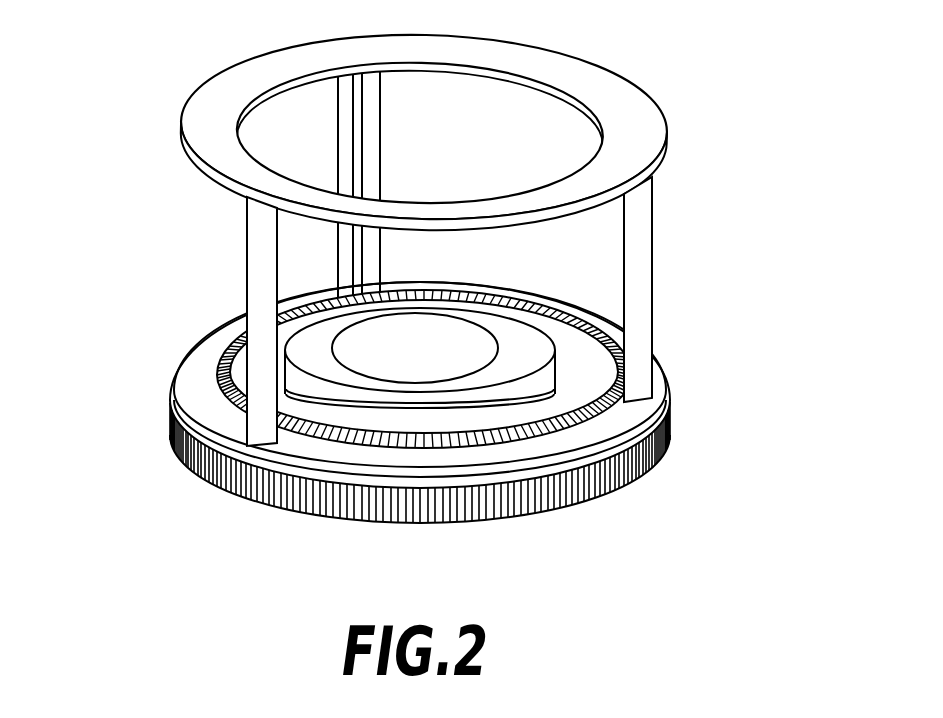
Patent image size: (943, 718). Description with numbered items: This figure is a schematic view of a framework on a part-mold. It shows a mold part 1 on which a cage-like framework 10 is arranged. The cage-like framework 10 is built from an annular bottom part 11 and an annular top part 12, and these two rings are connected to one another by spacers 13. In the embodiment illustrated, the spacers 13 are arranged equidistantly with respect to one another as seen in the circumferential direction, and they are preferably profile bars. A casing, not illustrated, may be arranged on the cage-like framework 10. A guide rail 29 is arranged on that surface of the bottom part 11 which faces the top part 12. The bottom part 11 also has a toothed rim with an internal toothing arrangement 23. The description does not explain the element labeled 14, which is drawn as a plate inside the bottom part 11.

The mold part 1 is at (390, 525).
The cage-like framework 10 is at (466, 144).
The annular bottom part 11 is at (197, 384).
The annular top part 12 is at (215, 156).
The spacers 13 is at (348, 148).
The turntable plate 14 is at (479, 386).
The internal toothing arrangement 23 is at (593, 393).
The guide rail 29 is at (609, 342).